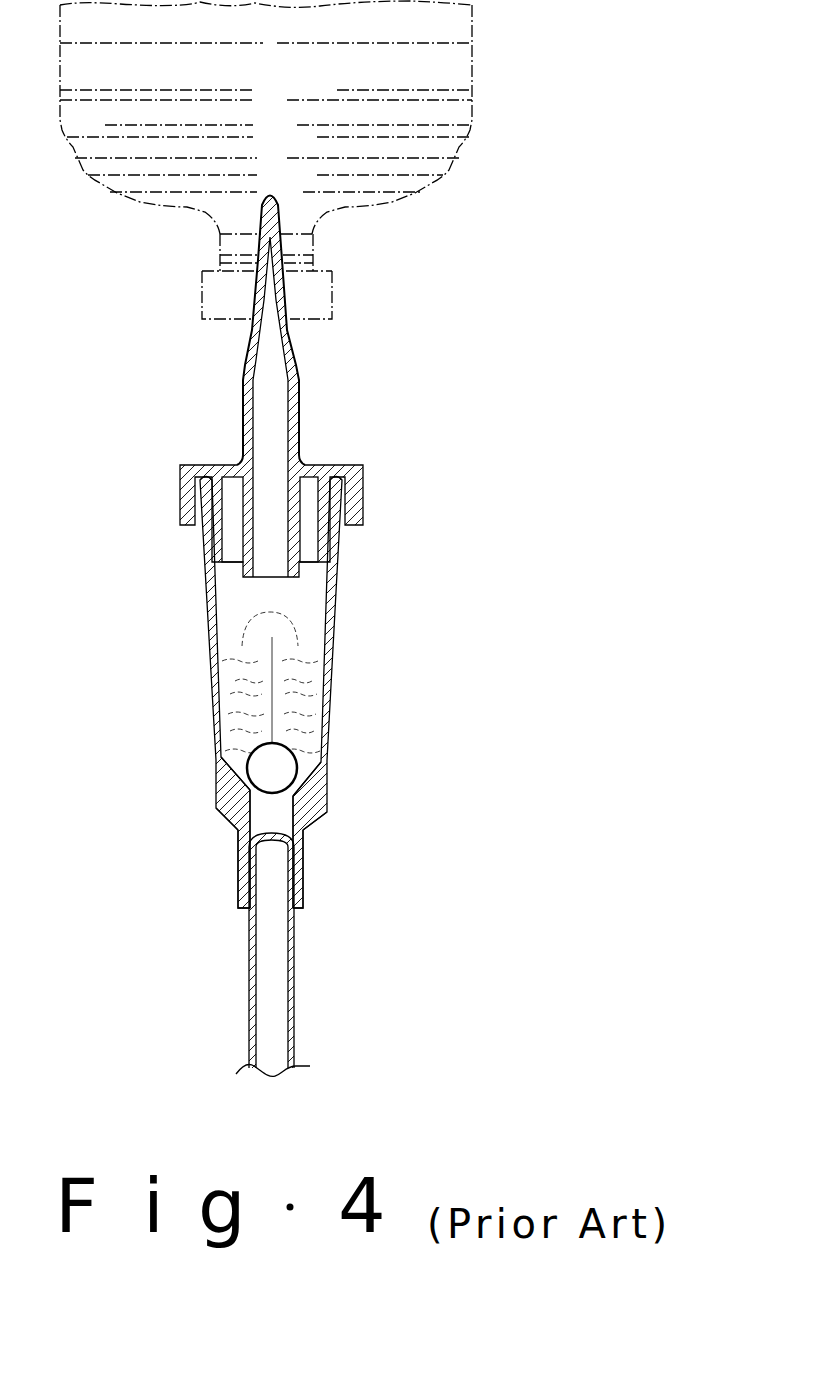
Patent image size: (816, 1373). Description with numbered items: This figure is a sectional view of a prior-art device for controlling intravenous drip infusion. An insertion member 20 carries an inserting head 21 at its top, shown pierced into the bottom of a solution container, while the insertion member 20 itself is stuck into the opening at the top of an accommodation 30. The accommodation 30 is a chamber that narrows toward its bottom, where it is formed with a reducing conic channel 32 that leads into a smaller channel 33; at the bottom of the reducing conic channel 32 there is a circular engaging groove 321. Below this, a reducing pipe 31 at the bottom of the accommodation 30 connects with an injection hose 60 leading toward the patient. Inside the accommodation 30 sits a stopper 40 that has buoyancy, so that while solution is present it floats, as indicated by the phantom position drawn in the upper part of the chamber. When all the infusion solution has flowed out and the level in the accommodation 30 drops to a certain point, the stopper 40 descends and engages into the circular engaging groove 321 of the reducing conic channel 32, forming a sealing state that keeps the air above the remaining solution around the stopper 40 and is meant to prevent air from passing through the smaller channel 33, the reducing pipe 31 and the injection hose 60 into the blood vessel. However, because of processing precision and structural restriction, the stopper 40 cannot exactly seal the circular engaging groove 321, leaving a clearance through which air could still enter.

The insertion member 20 is at (375, 485).
The inserting head 21 is at (295, 377).
The accommodation 30 is at (353, 645).
The reducing pipe 31 is at (297, 877).
The reducing conic channel 32 is at (313, 767).
The circular engaging groove 321 is at (313, 813).
The smaller channel 33 is at (268, 817).
The stopper 40 is at (260, 630).
The injection hose 60 is at (272, 983).